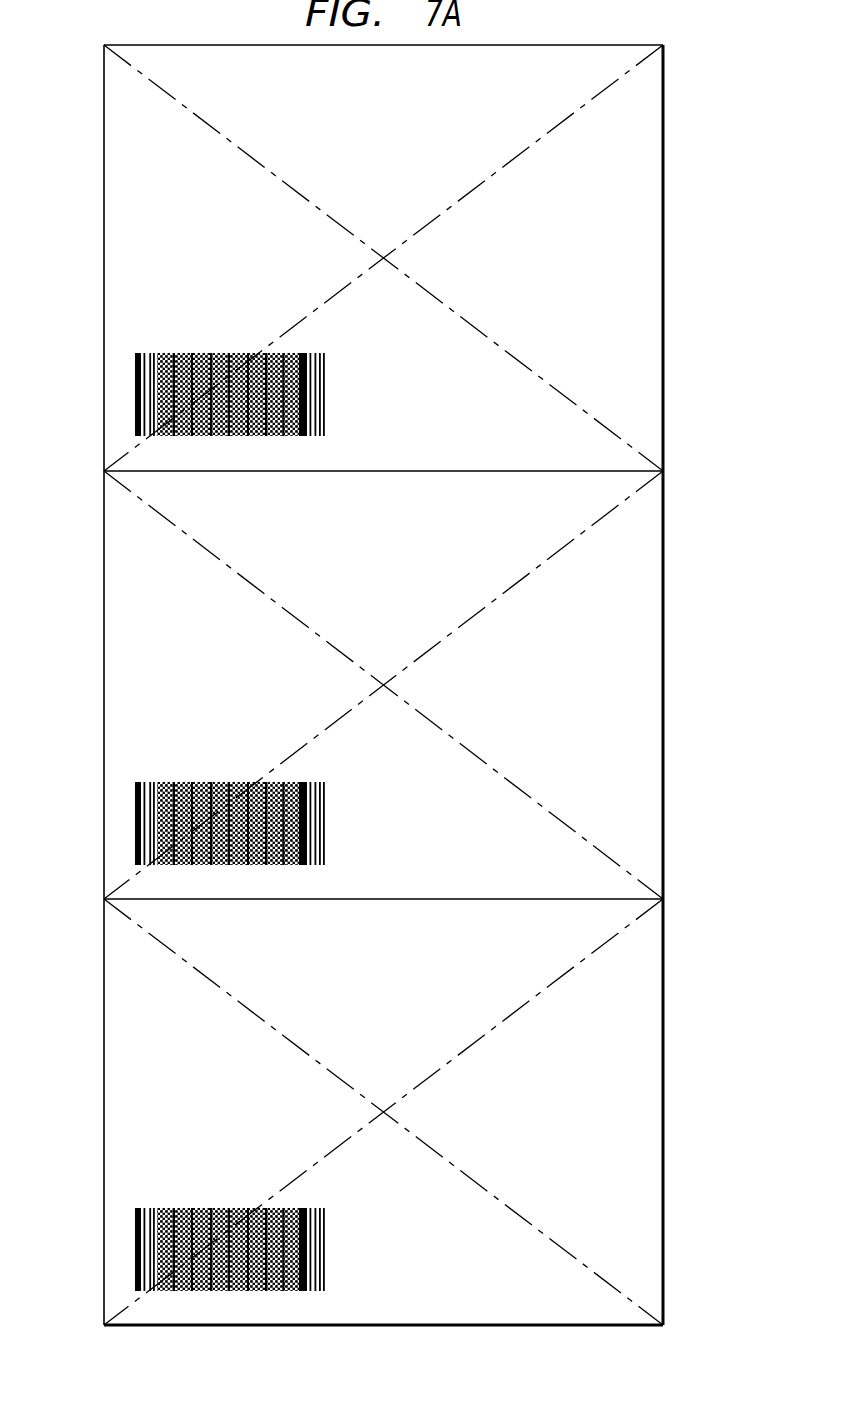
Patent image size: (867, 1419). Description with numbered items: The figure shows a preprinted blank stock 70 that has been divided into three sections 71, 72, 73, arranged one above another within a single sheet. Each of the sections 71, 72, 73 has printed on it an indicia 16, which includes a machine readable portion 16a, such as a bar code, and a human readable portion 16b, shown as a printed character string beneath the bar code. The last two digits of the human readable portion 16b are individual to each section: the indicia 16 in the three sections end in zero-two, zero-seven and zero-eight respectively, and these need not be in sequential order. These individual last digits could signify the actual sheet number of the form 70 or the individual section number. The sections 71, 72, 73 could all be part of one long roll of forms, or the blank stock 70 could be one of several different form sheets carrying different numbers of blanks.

The blank stock 70 is at (700, 598).
The section 71 is at (98, 257).
The section 72 is at (98, 681).
The section 73 is at (98, 1111).
The indicia 16 is at (261, 816).
The machine readable portion of the indicia 16a is at (228, 802).
The human readable portion of the indicia 16b is at (260, 873).